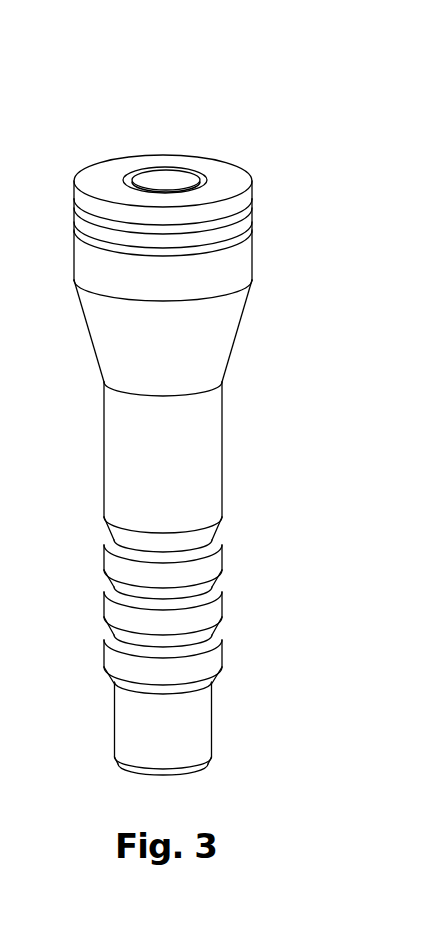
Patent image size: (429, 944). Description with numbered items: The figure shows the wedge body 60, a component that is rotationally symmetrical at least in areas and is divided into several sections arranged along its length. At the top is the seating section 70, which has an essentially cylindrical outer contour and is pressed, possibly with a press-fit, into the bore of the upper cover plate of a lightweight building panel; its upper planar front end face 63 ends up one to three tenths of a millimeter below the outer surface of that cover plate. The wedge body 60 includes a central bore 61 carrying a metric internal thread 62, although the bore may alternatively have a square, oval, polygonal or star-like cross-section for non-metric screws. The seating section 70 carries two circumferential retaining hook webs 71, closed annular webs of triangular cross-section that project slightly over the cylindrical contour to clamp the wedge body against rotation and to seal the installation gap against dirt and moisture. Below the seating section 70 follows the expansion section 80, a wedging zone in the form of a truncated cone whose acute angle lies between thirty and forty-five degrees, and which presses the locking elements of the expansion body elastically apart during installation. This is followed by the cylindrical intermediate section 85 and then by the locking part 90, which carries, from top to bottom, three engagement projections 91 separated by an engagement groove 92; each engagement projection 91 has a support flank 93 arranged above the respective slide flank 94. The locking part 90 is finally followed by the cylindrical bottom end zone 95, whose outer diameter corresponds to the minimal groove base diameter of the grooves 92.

The wedge body 60 is at (234, 129).
The central bore 61 is at (202, 175).
The metric internal thread 62 is at (225, 187).
The upper planar front end face 63 is at (255, 177).
The retaining hook webs 71 is at (254, 203).
The seating section 70 is at (272, 260).
The expansion section 80 is at (250, 333).
The intermediate section 85 is at (235, 452).
The locking part 90 is at (249, 601).
The support flank 93 is at (217, 552).
The slide flank 94 is at (207, 582).
The engagement projections 91 is at (235, 613).
The engagement groove 92 is at (230, 641).
The bottom end zone 95 is at (225, 721).